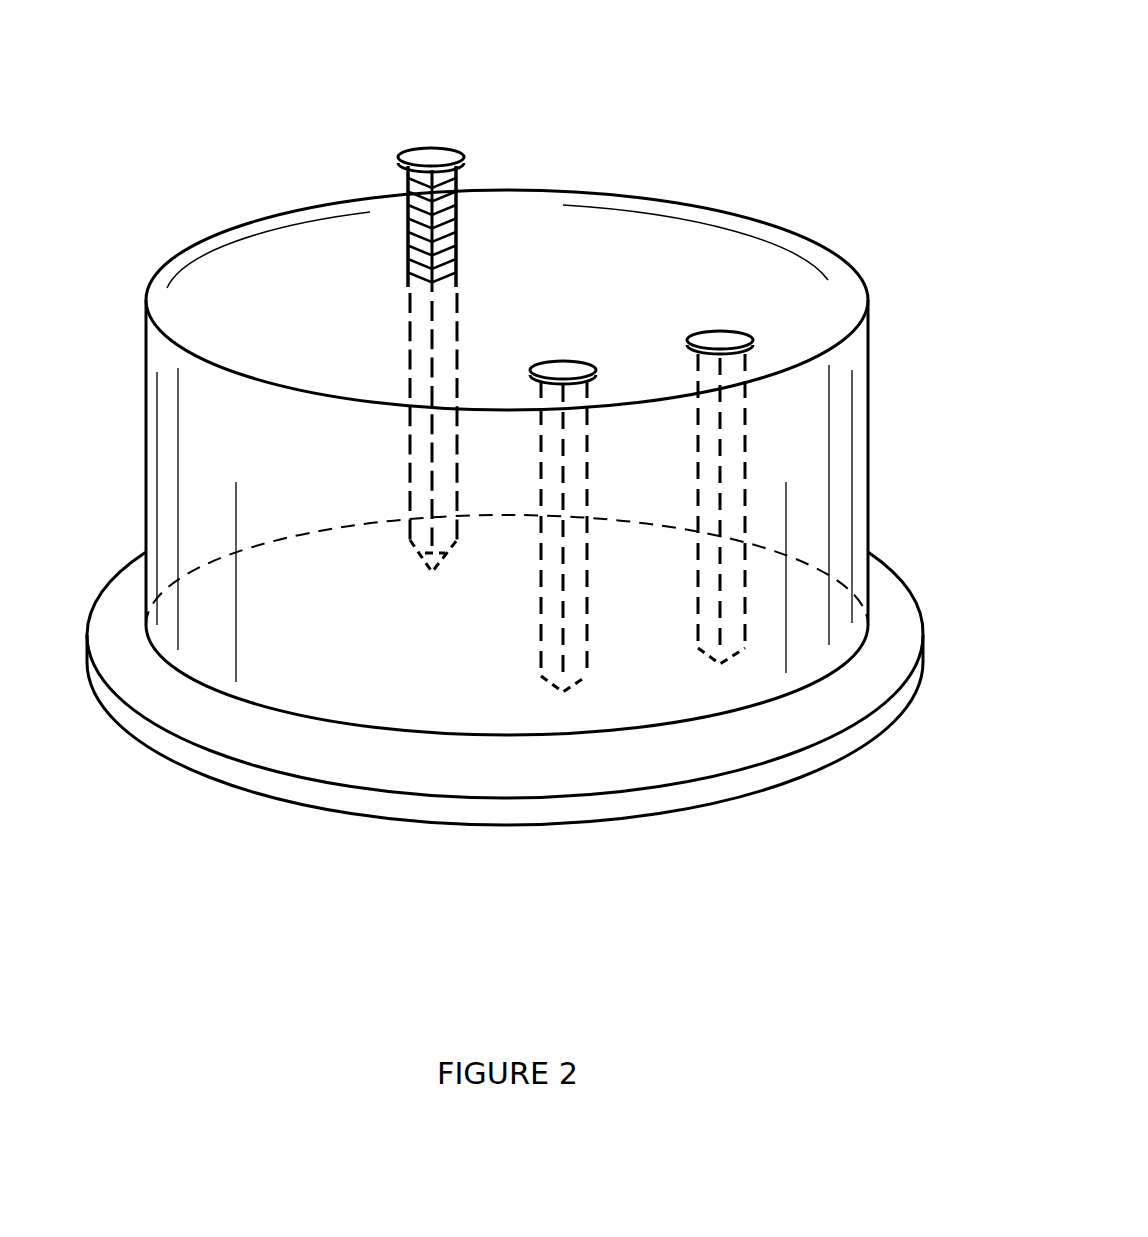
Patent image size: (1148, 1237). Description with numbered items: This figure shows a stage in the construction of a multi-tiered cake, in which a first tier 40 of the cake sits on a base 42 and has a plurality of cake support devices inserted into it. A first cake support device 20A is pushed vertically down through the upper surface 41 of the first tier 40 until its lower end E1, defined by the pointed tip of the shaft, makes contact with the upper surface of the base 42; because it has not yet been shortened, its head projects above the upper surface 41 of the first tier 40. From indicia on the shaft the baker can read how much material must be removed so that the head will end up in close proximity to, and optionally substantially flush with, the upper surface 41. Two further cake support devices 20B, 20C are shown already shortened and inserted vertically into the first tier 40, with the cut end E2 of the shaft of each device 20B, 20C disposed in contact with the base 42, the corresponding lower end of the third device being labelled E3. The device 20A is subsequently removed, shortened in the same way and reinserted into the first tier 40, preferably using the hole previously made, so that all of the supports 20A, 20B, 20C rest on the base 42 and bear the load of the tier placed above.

The first cake support device 20A is at (421, 152).
The shortened cake support device 20B is at (733, 338).
The shortened cake support device 20C is at (578, 365).
The first tier 40 is at (602, 224).
The upper surface 41 is at (252, 290).
The base 42 is at (262, 746).
The lower end E1 is at (420, 557).
The cut end E2 is at (553, 676).
The tip of third electrode E3 is at (707, 648).